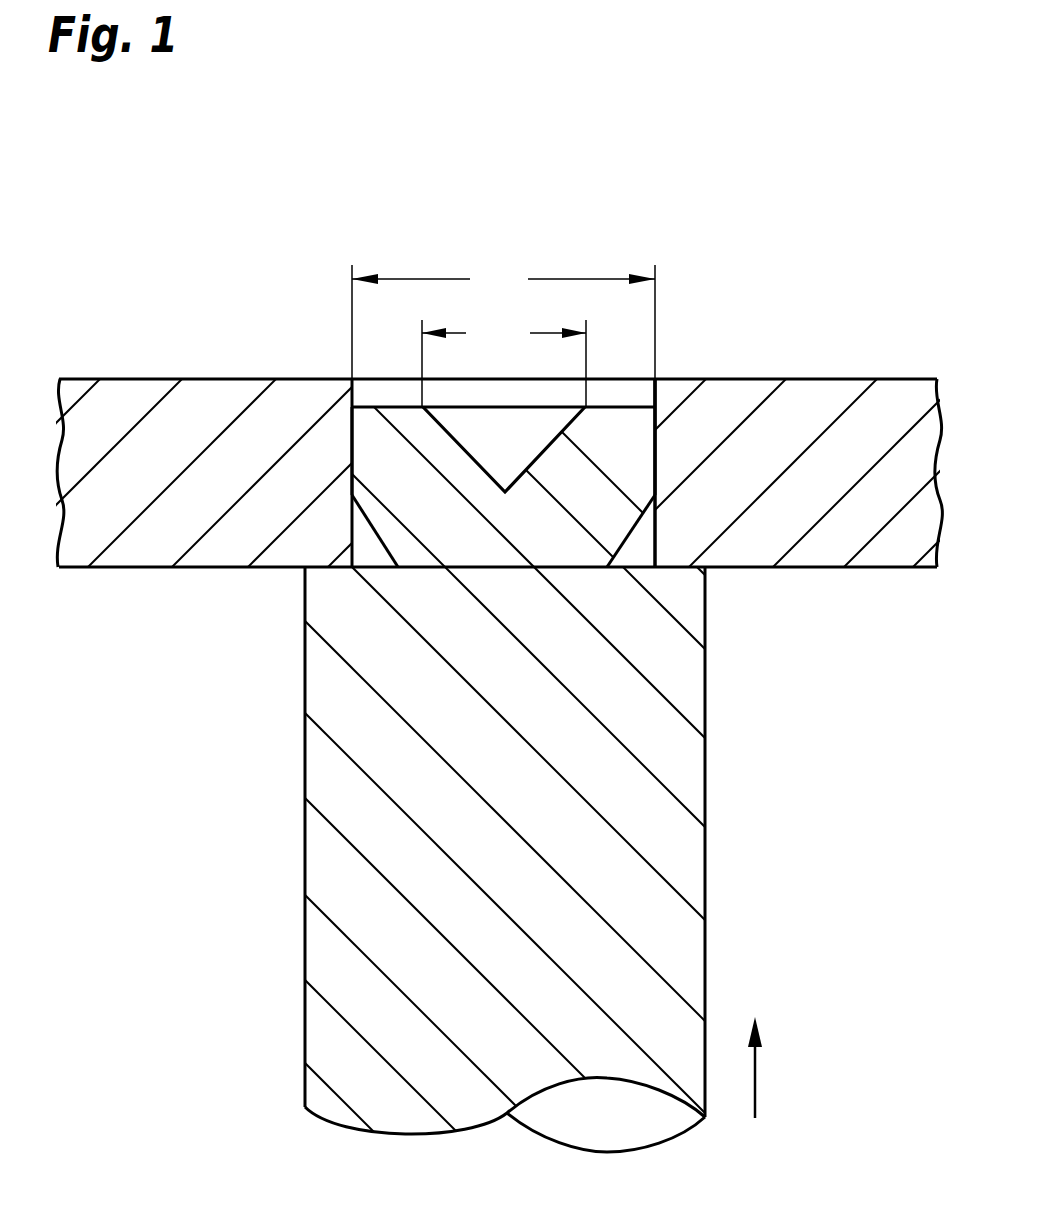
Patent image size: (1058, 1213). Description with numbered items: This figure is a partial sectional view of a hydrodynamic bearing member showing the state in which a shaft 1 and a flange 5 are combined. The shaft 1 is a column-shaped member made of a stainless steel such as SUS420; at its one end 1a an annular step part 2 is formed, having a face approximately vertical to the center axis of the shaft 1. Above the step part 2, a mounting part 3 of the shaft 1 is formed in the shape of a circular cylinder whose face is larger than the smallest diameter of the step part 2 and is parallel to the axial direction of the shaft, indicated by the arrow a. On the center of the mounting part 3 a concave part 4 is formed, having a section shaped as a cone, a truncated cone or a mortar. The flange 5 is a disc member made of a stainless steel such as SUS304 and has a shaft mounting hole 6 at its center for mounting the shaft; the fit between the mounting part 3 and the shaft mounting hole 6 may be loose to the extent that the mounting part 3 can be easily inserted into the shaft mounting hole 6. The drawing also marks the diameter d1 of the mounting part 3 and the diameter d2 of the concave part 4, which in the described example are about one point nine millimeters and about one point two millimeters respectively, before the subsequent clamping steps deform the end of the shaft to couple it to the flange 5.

The shaft 1 is at (332, 943).
The one end of the shaft 1a is at (405, 483).
The annular step part 2 is at (655, 533).
The mounting part 3 is at (652, 462).
The concave part 4 is at (455, 432).
The flange 5 is at (138, 392).
The shaft mounting hole 6 is at (652, 397).
The diameter of the mounting part d1 is at (503, 319).
The diameter of the concave part d2 is at (504, 362).
The arrow indicating axial direction a is at (757, 1080).